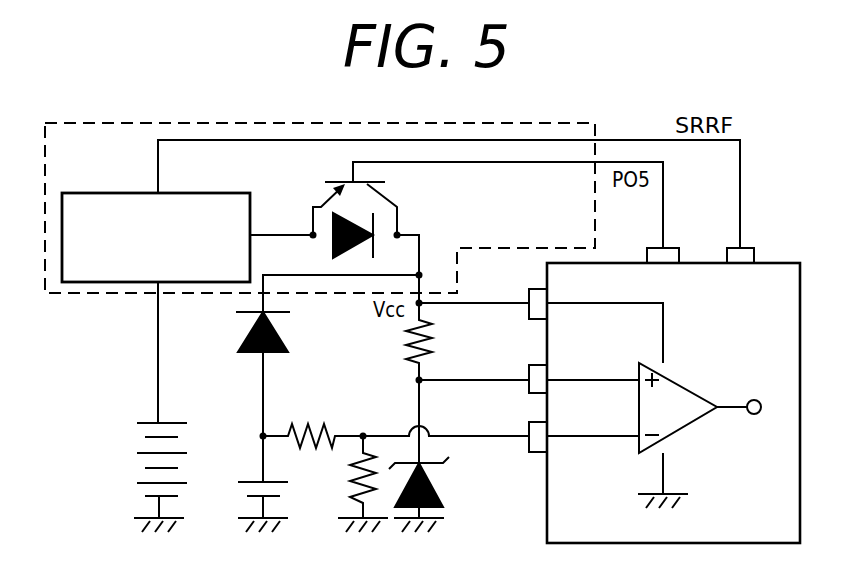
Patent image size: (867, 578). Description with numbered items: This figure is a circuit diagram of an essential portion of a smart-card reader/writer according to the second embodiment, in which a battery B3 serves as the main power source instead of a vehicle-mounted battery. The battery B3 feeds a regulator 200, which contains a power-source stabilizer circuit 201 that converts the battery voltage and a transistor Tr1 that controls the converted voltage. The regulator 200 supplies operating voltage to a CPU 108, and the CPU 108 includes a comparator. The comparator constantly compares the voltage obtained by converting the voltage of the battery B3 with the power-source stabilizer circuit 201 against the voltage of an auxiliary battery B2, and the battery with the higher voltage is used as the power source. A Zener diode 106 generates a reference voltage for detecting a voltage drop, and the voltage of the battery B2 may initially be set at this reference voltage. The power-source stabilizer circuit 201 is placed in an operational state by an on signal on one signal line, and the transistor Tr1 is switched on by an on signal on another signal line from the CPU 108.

The regulator 200 is at (130, 121).
The power-source stabilizer circuit 201 is at (112, 193).
The CPU 108 is at (770, 262).
The Zener diode 106 is at (447, 491).
The battery B2 is at (287, 487).
The battery B3 is at (135, 437).
The transistor Tr1 is at (486, 201).